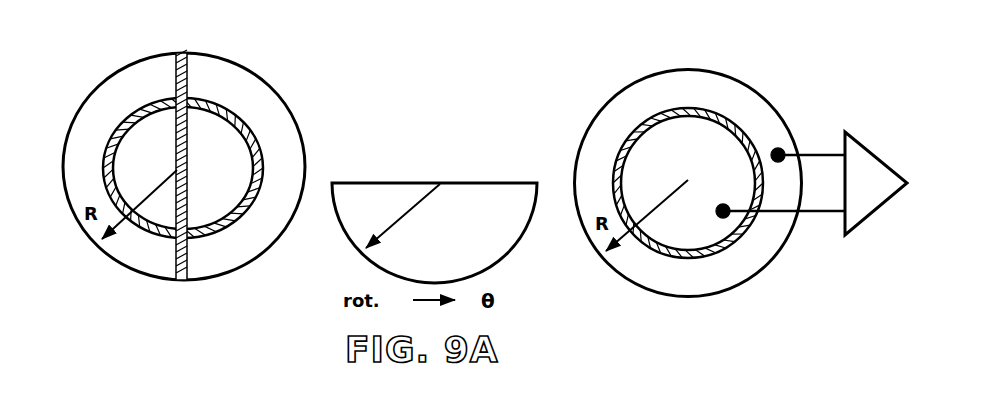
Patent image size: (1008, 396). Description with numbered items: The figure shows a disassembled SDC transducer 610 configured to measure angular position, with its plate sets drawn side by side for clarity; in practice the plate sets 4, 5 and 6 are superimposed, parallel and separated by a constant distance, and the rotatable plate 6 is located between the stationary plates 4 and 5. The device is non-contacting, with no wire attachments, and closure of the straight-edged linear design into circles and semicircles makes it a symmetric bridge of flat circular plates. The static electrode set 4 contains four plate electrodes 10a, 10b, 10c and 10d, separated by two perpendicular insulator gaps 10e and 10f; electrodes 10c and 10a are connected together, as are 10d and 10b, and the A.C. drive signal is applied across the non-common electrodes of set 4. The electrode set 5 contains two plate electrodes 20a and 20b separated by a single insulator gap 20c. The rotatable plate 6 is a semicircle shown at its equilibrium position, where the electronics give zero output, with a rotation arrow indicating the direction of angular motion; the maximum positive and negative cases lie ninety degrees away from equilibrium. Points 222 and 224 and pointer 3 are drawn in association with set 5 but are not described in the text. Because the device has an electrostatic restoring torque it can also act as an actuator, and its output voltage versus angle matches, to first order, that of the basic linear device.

The SDC transducer 610 is at (541, 47).
The static electrode set 4 is at (131, 279).
The moving electrode set 5 is at (749, 68).
The rotatable plate 6 is at (434, 233).
The pointer 3 is at (876, 183).
The plate electrode 10a is at (214, 164).
The plate electrode 10b is at (142, 164).
The plate electrode 10c is at (141, 84).
The plate electrode 10d is at (215, 84).
The insulator gap 10e is at (181, 281).
The insulator gap 10f is at (253, 130).
The electrode 20a is at (688, 163).
The electrode 20b is at (689, 279).
The insulator gap 20c is at (623, 137).
The first sensor point 222 is at (808, 213).
The second sensor point 224 is at (813, 152).